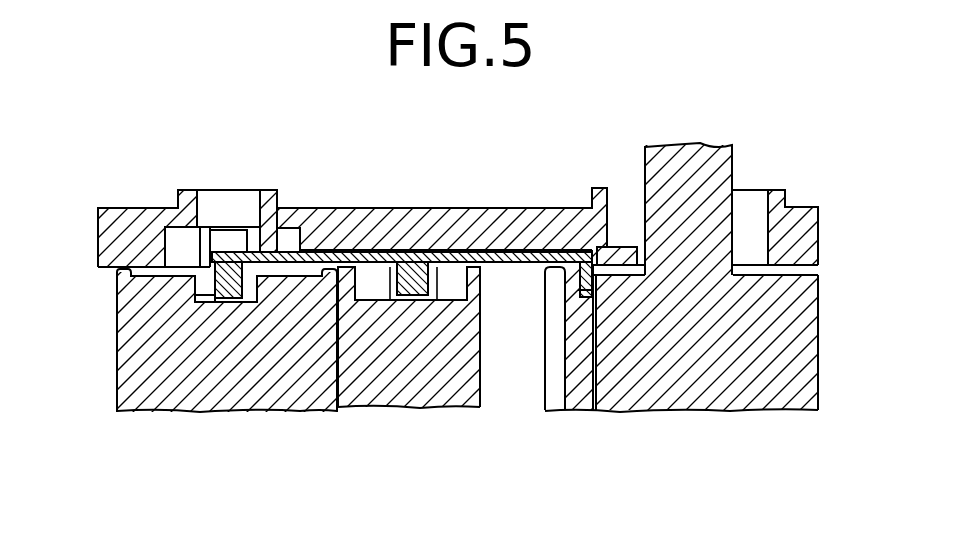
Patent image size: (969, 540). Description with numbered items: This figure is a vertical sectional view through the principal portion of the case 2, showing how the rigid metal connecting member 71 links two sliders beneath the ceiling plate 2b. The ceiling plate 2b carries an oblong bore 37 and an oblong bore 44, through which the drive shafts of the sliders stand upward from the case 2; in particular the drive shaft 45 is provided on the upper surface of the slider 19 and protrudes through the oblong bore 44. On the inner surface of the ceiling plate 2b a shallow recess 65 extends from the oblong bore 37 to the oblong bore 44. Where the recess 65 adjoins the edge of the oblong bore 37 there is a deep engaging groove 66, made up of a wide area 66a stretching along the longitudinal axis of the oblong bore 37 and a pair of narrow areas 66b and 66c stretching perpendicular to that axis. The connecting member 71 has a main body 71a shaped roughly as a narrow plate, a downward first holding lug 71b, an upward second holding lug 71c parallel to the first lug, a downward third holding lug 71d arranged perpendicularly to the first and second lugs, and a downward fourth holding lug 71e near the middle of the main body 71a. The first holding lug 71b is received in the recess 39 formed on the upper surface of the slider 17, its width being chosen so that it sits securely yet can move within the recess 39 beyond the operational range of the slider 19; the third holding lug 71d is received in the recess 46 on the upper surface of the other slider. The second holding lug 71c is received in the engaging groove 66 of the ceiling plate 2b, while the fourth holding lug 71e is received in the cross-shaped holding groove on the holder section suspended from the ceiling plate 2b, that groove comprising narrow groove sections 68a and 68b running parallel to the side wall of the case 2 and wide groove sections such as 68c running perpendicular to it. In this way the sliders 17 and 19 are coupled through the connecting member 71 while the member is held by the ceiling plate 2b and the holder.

The case 2 is at (484, 261).
The ceiling plate 2b is at (455, 215).
The slider 17 is at (484, 295).
The slider 19 is at (744, 375).
The oblong bore 37 is at (248, 203).
The recess 39 is at (208, 305).
The oblong bore 44 is at (750, 197).
The drive shaft 45 is at (693, 148).
The recess 46 is at (590, 290).
The recess 65 is at (623, 253).
The engaging groove 66 is at (240, 179).
The wide area 66a is at (205, 238).
The narrow area 66b is at (163, 240).
The narrow area 66c is at (292, 238).
The narrow groove section 68a is at (484, 325).
The narrow groove section 68b is at (452, 293).
The wide groove section 68c is at (446, 393).
The connecting member 71 is at (404, 288).
The main body 71a is at (400, 256).
The first holding lug 71b is at (235, 295).
The second holding lug 71c is at (238, 235).
The third holding lug 71d is at (585, 296).
The fourth holding lug 71e is at (416, 290).